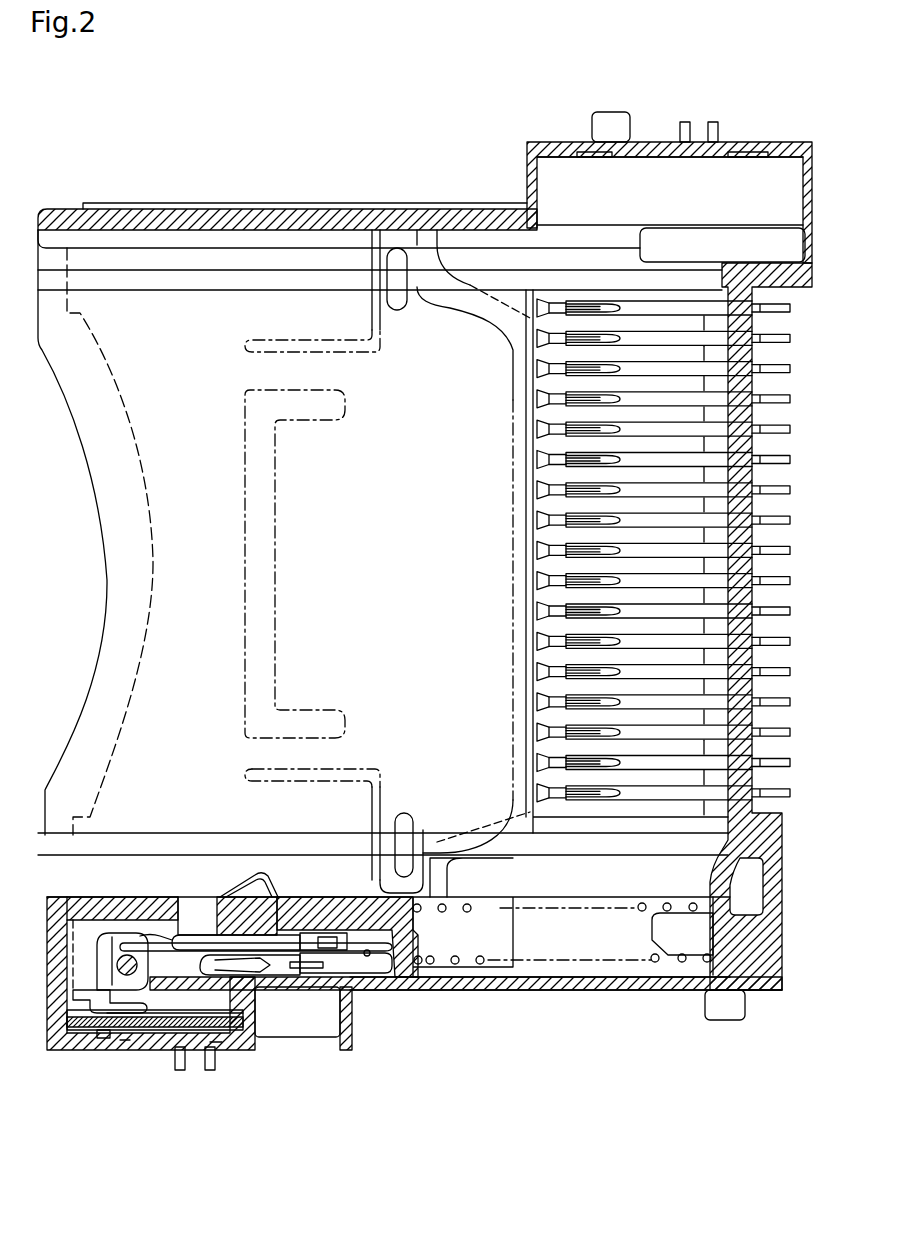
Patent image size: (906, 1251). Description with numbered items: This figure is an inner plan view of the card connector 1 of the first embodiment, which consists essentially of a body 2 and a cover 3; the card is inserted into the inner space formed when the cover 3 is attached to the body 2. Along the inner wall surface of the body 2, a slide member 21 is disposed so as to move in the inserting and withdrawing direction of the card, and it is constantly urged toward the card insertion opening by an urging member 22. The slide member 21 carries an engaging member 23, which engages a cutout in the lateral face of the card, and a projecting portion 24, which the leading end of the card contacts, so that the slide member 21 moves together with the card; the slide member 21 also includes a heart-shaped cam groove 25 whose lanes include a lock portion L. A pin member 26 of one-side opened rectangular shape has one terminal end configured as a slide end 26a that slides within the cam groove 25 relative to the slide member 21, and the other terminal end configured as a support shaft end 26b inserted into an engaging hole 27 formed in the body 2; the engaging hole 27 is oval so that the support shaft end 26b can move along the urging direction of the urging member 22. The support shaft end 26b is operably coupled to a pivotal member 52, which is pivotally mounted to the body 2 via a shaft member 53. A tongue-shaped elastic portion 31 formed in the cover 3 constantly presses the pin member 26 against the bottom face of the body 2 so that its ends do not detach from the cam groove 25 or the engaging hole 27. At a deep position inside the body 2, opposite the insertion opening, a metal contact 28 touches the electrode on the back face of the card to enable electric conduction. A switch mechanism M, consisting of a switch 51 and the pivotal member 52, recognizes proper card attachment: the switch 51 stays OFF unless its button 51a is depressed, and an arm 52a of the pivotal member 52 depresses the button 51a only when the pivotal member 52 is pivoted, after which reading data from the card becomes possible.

The card connector 1 is at (118, 150).
The body 2 is at (778, 940).
The cover 3 is at (262, 207).
The slide member 21 is at (400, 977).
The urging member 22 is at (682, 962).
The engaging member 23 is at (252, 880).
The projecting portion 24 is at (493, 870).
The heart-shaped cam groove 25 is at (212, 930).
The pin member 26 is at (300, 947).
The slide end 26a is at (367, 958).
The support shaft end 26b is at (142, 936).
The engaging hole 27 is at (125, 940).
The contact 28 is at (560, 518).
The tongue-shaped elastic portion 31 is at (292, 1000).
The switch 51 is at (163, 1047).
The button 51a is at (108, 1043).
The pivotal member 52 is at (88, 955).
The arm 52a is at (100, 1047).
The shaft member 53 is at (118, 955).
The lock portion L is at (215, 1047).
The switch mechanism M is at (123, 1043).